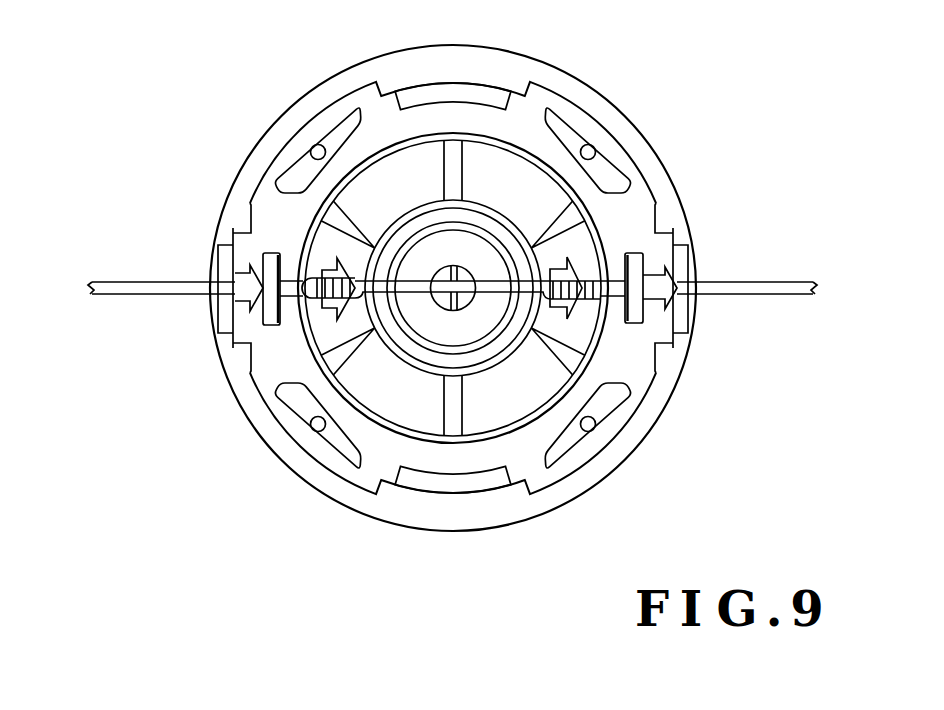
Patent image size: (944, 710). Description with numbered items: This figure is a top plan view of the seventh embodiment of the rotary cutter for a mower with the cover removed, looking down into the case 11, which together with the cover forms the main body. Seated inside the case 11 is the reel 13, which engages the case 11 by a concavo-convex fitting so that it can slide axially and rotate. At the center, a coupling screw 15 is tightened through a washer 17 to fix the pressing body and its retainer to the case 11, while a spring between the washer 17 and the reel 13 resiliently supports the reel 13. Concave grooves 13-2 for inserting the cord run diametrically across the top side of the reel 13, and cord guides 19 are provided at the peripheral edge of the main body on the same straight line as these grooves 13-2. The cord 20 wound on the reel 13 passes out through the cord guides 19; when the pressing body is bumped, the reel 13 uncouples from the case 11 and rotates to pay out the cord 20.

The case 11 is at (503, 62).
The reel 13 is at (508, 168).
The concave groove for inserting a cord 13-2 is at (303, 286).
The coupling screw 15 is at (468, 300).
The washer 17 is at (423, 318).
The cord guide 19 is at (270, 263).
The cord 20 is at (764, 281).